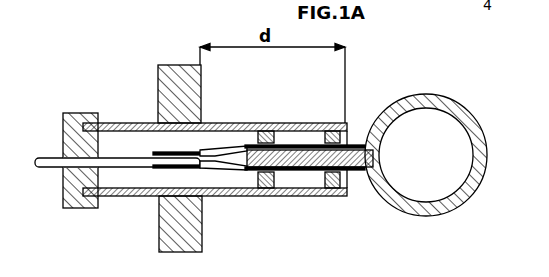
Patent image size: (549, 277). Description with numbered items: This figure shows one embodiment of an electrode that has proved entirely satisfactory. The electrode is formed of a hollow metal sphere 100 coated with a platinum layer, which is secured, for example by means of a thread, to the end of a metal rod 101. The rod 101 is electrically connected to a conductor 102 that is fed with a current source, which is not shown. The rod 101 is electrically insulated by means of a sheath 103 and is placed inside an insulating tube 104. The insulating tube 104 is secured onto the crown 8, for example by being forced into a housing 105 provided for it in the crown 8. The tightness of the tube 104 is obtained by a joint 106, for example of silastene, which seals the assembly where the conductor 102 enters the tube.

The crown 8 is at (160, 226).
The hollow metal sphere 100 is at (468, 193).
The metal rod 101 is at (303, 160).
The conductor 102 is at (122, 158).
The sheath 103 is at (213, 166).
The insulating tube 104 is at (272, 195).
The housing 105 is at (188, 118).
The joint 106 is at (64, 114).